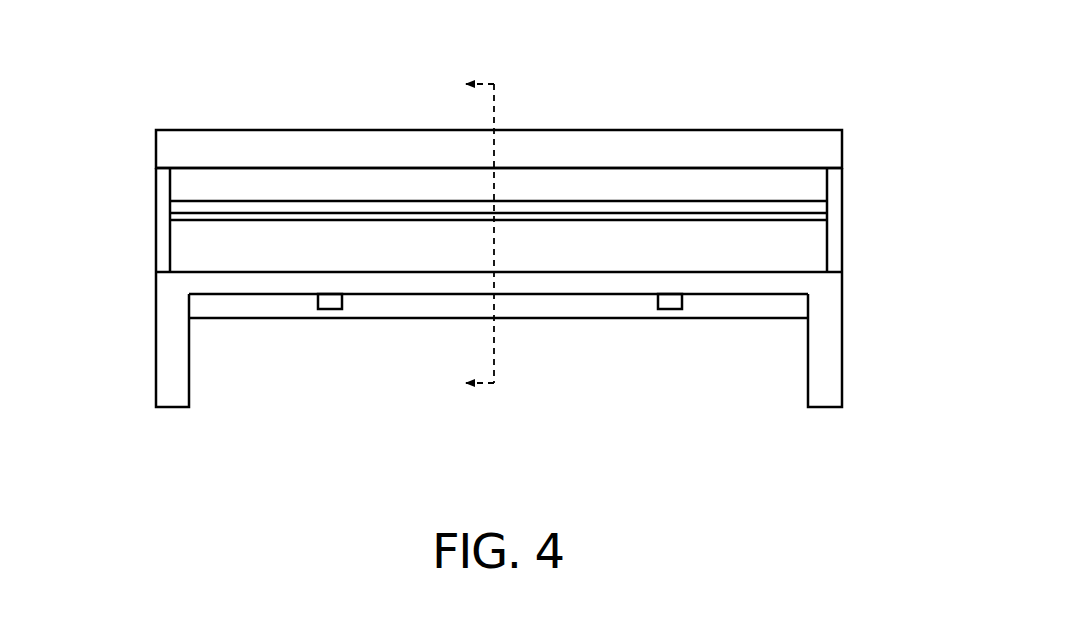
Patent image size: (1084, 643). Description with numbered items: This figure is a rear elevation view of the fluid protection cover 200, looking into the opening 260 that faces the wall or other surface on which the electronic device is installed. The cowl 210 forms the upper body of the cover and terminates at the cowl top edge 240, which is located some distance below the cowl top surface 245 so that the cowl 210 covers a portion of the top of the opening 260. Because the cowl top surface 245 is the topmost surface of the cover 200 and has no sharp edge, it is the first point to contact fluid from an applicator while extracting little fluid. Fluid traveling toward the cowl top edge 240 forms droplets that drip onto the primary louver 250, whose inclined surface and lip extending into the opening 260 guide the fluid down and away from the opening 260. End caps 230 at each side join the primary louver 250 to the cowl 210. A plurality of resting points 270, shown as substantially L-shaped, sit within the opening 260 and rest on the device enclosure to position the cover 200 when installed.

The fluid protection cover 200 is at (122, 88).
The cowl 210 is at (307, 153).
The end caps 230 is at (155, 350).
The cowl top edge 240 is at (629, 168).
The cowl top surface 245 is at (535, 130).
The primary louver 250 is at (548, 252).
The opening 260 is at (768, 190).
The resting points 270 is at (330, 309).